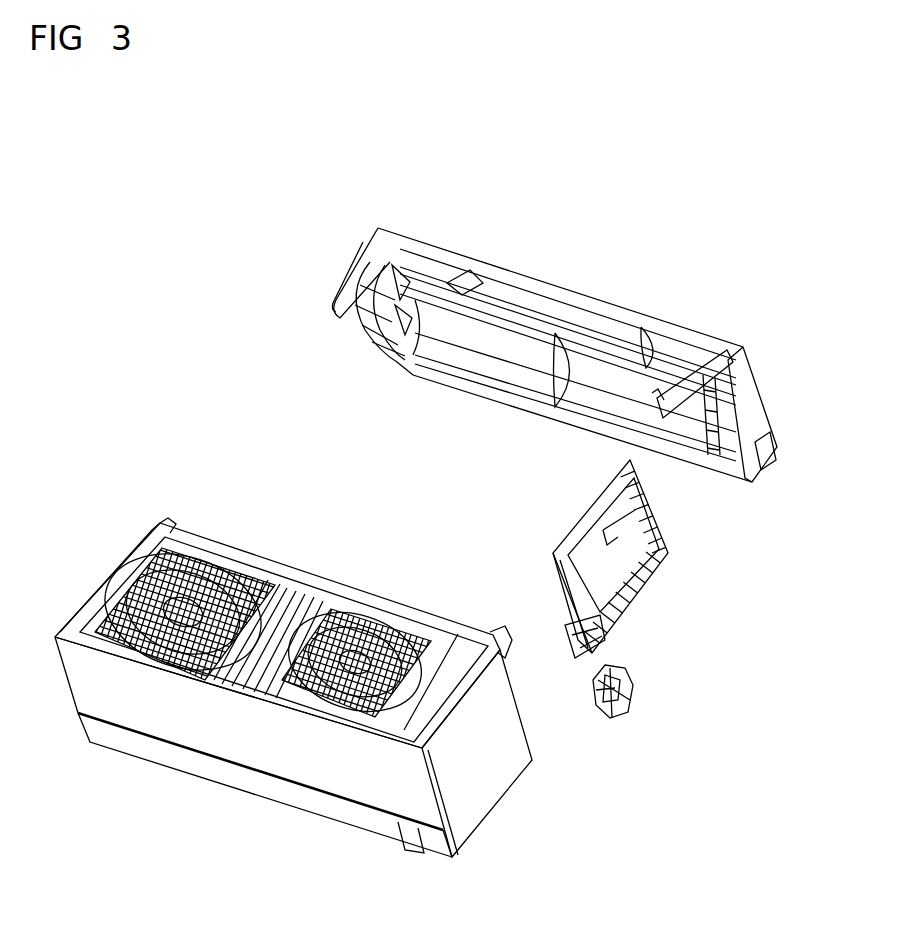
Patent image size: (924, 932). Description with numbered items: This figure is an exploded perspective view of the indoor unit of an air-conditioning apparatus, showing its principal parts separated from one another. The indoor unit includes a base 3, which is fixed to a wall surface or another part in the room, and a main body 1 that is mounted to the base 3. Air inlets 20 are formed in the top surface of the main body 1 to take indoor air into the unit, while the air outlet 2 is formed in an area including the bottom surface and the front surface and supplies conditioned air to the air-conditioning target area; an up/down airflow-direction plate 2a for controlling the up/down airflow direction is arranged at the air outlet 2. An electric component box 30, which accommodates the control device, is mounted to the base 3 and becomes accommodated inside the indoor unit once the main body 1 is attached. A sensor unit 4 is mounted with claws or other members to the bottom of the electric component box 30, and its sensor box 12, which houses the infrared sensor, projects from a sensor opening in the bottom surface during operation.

The main body 1 is at (483, 772).
The air outlet 2 is at (220, 822).
The up/down airflow-direction plate 2a is at (305, 797).
The base 3 is at (745, 390).
The sensor unit 4 is at (656, 671).
The sensor box 12 is at (632, 713).
The air inlets 20 is at (377, 610).
The electric component box 30 is at (650, 533).